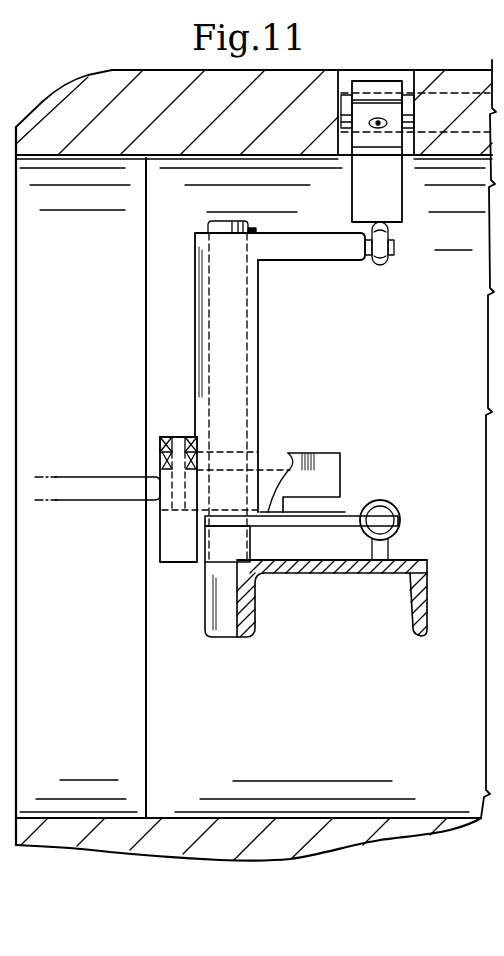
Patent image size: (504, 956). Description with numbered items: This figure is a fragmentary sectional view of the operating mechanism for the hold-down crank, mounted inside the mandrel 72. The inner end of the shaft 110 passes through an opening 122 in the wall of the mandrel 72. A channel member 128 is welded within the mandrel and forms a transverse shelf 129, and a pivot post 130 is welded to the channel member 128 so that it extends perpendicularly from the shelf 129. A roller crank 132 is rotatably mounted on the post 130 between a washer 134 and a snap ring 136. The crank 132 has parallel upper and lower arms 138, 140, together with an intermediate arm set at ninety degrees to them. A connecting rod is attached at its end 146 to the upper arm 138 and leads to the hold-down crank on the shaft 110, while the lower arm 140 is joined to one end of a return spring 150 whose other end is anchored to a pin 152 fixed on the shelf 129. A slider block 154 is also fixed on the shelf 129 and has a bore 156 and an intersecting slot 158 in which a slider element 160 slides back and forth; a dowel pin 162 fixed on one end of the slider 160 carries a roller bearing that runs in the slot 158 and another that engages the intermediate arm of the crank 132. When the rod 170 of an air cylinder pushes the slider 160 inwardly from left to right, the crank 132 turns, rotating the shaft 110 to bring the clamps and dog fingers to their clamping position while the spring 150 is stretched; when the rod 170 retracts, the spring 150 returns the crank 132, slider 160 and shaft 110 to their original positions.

The mandrel 72 is at (160, 77).
The shaft 110 is at (406, 92).
The opening 122 is at (342, 75).
The channel member 128 is at (412, 600).
The transverse shelf 129 is at (412, 566).
The pivot post 130 is at (209, 640).
The roller crank 132 is at (259, 360).
The washer 134 is at (207, 563).
The snap ring 136 is at (200, 233).
The upper arm 138 is at (332, 261).
The lower arm 140 is at (356, 512).
The connecting rod end 146 is at (388, 265).
The return spring 150 is at (399, 507).
The pin 152 is at (382, 562).
The slider block 154 is at (178, 562).
The bore 156 is at (342, 474).
The slot 158 is at (320, 438).
The slider element 160 is at (160, 472).
The dowel pin 162 is at (176, 435).
The rod 170 is at (80, 492).